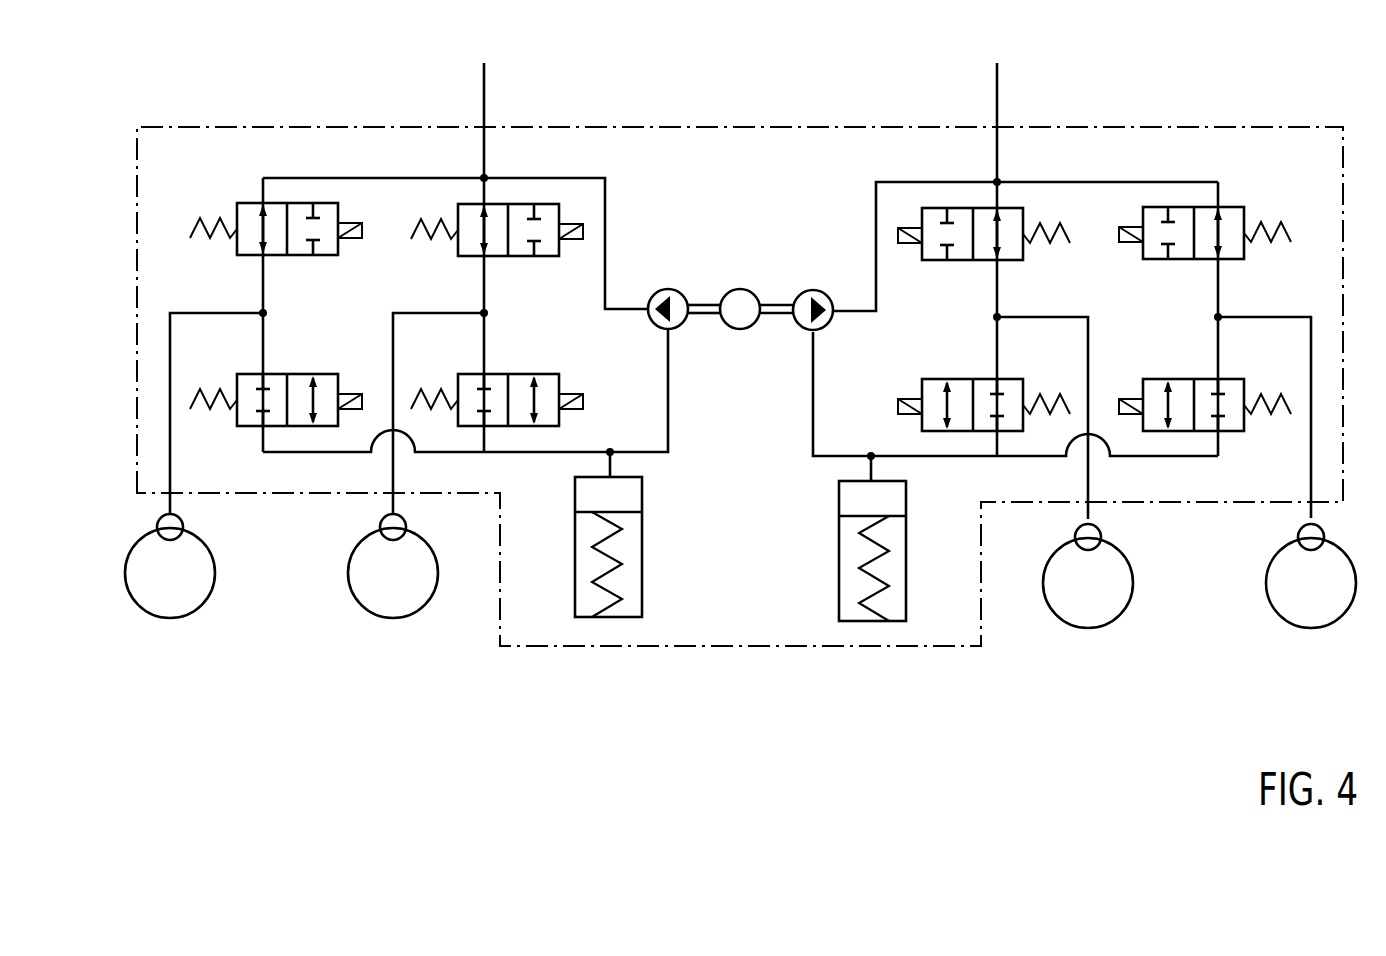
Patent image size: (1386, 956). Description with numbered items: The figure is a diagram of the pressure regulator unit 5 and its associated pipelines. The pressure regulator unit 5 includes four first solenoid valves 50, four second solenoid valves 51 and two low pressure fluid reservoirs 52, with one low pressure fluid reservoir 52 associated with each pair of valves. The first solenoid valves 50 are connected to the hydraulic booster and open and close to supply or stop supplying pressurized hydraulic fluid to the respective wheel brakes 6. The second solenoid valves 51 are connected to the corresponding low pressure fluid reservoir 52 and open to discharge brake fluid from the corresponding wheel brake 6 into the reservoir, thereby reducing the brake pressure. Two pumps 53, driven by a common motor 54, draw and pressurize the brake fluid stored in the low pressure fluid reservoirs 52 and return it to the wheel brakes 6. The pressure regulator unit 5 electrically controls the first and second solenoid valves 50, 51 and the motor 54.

The pressure regulator unit 5 is at (113, 425).
The wheel brake 6 is at (352, 598).
The first solenoid valve 50 is at (251, 211).
The second solenoid valve 51 is at (246, 418).
The low pressure fluid reservoir 52 is at (642, 557).
The pump 53 is at (802, 328).
The motor 54 is at (746, 291).